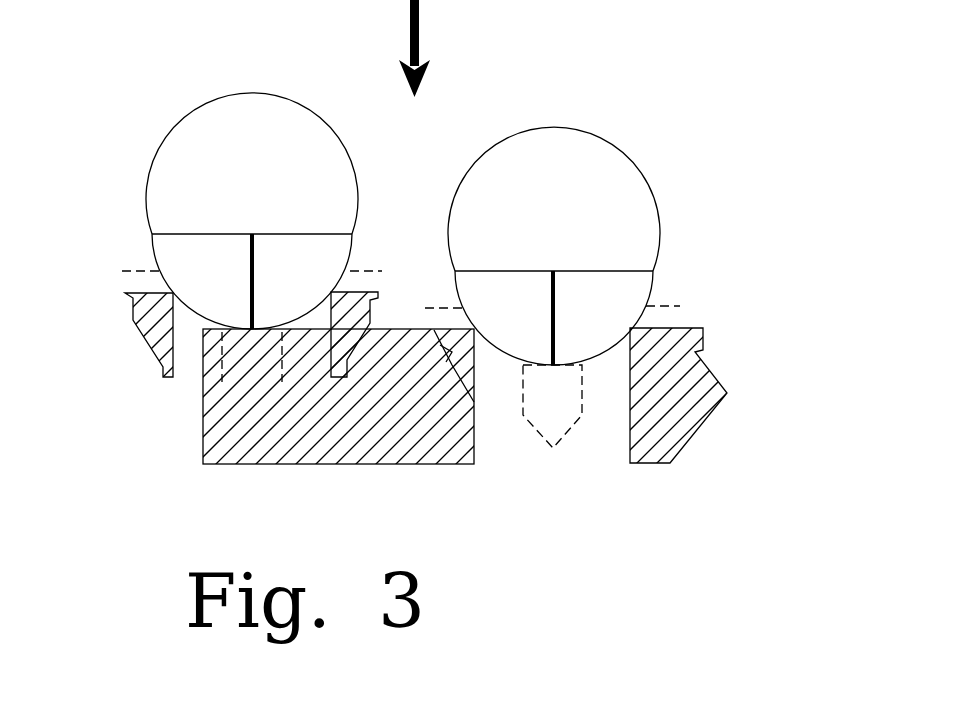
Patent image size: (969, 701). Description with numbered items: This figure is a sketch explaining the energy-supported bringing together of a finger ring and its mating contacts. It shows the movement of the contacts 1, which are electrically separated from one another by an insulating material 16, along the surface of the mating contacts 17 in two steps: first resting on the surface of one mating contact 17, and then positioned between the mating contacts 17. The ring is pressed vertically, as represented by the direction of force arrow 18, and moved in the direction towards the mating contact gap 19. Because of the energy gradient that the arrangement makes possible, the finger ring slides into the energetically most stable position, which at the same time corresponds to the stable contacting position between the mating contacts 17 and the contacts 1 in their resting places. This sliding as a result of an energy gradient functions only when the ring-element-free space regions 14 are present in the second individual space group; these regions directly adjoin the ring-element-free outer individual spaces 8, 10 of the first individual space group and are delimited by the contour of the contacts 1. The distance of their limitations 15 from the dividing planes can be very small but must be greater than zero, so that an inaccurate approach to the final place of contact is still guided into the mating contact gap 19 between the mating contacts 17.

The contact 1 is at (193, 252).
The outer individual space 8 is at (143, 325).
The outer individual space 10 is at (672, 350).
The ring-element-free space region 14 is at (128, 282).
The limitation 15 is at (122, 270).
The insulating material 16 is at (252, 233).
The mating contact 17 is at (203, 463).
The direction of force arrow 18 is at (427, 0).
The mating contact gap 19 is at (535, 447).